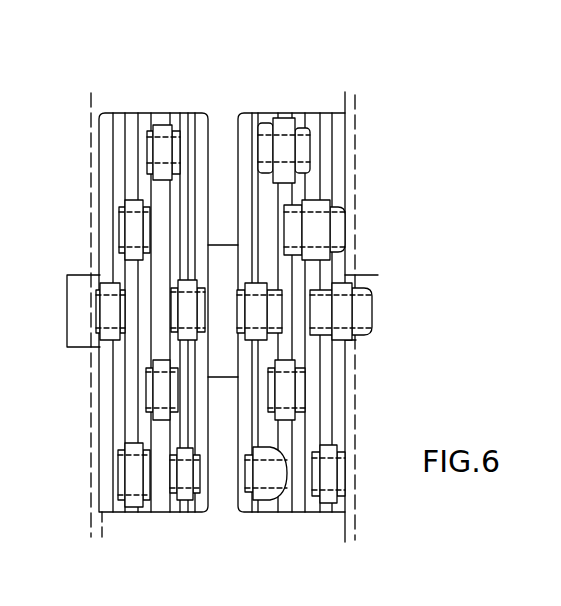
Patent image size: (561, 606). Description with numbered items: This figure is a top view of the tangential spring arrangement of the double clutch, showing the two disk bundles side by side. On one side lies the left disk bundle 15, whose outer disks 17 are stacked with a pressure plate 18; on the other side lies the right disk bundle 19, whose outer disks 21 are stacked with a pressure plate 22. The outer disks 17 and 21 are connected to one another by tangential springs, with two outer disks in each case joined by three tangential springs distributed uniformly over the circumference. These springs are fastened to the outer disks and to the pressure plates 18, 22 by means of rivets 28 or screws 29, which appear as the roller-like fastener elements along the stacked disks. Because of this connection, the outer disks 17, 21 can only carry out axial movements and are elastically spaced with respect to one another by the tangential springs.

The left disk bundle 15 is at (122, 84).
The outer disks 17 is at (187, 120).
The pressure plate 18 is at (108, 125).
The right disk bundle 19 is at (295, 83).
The outer disks 21 is at (283, 167).
The pressure plate 22 is at (337, 140).
The rivets 28 is at (117, 487).
The screws 29 is at (372, 315).